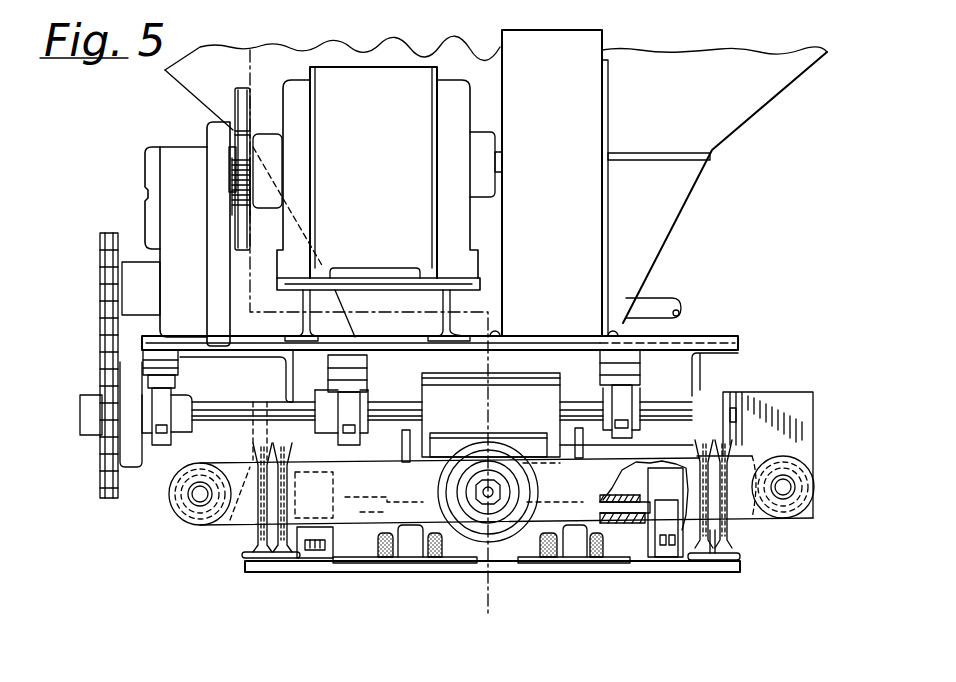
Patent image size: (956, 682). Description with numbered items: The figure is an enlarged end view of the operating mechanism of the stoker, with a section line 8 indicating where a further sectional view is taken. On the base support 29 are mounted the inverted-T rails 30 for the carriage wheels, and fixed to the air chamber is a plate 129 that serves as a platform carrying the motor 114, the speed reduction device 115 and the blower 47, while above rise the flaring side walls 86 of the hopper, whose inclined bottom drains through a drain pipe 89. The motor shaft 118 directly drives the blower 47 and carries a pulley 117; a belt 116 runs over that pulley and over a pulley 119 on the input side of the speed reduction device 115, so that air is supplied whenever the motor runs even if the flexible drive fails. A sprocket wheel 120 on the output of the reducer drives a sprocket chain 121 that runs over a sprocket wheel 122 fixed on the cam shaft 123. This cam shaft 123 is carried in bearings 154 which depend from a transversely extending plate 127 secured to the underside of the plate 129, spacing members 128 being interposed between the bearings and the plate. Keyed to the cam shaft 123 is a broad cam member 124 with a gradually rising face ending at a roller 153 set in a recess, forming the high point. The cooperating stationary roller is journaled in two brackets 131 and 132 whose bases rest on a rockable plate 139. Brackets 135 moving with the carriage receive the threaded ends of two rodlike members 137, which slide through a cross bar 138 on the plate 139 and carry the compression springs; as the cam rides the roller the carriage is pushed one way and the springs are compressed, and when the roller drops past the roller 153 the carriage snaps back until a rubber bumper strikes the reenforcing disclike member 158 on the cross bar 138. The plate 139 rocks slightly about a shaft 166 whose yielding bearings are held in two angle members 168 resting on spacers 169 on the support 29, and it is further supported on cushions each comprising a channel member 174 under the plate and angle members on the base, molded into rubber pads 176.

The section line 8— 8 is at (262, 54).
The support 29 is at (735, 570).
The rails 30 is at (254, 556).
The blower 47 is at (600, 183).
The flaring side walls 86 is at (745, 124).
The drain pipe 89 is at (670, 298).
The motor 114 is at (378, 84).
The speed reduction device 115 is at (178, 146).
The belt 116 is at (243, 213).
The pulley 117 is at (230, 160).
The motor shaft 118 is at (503, 163).
The pulley 119 is at (236, 98).
The sprocket wheel 120 is at (130, 262).
The sprocket chain 121 is at (99, 326).
The sprocket wheel 122 is at (128, 468).
The cam shaft 123 is at (215, 405).
The cam member 124 is at (536, 378).
The transversely extending plate 127 is at (318, 358).
The spacing members 128 is at (180, 366).
The plate 129 is at (267, 341).
The bracket 131 is at (640, 448).
The bracket 132 is at (404, 448).
The brackets 135 is at (786, 391).
The rodlike members 137 is at (196, 496).
The cross bar 138 is at (752, 520).
The rockable plate 139 is at (650, 547).
The roller 153 is at (540, 442).
The bearings 154 is at (172, 393).
The reenforcing disclike member 158 is at (474, 452).
The shaft 166 is at (647, 462).
The angle members 168 is at (668, 547).
The spacers 169 is at (313, 555).
The channel member 174 is at (411, 541).
The rubber pads 176 is at (383, 540).